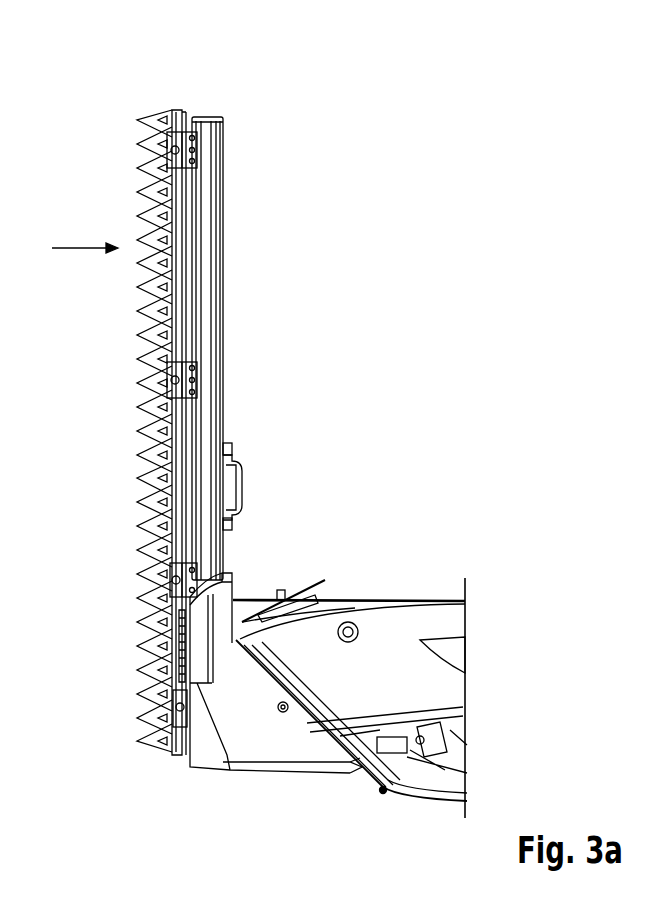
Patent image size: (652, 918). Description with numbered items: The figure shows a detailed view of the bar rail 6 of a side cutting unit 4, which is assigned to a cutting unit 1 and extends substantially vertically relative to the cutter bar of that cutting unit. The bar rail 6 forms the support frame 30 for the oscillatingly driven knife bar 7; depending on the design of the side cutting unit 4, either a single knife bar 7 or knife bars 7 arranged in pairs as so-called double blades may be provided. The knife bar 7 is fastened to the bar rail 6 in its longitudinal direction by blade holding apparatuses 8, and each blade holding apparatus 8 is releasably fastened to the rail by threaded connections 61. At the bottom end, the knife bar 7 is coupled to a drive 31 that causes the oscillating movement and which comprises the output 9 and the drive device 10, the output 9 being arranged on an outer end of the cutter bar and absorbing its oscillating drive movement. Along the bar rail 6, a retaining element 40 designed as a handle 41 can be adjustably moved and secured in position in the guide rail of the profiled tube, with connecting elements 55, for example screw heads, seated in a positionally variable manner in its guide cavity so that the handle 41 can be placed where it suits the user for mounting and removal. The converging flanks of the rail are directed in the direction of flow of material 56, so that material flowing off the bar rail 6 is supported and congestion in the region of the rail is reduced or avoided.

The cutting unit 1 is at (428, 582).
The side cutting unit 4 is at (233, 110).
The bar rail 6 is at (261, 348).
The support frame 30 is at (222, 238).
The knife bar 7 is at (153, 110).
The blade holding apparatus 8 is at (186, 126).
The threaded connection 61 is at (200, 159).
The direction of flow of material 56 is at (78, 247).
The connecting element 55 is at (235, 446).
The retaining element 40 is at (287, 594).
The handle 41 is at (245, 492).
The drive 31 is at (327, 829).
The output 9 is at (327, 829).
The drive device 10 is at (383, 793).